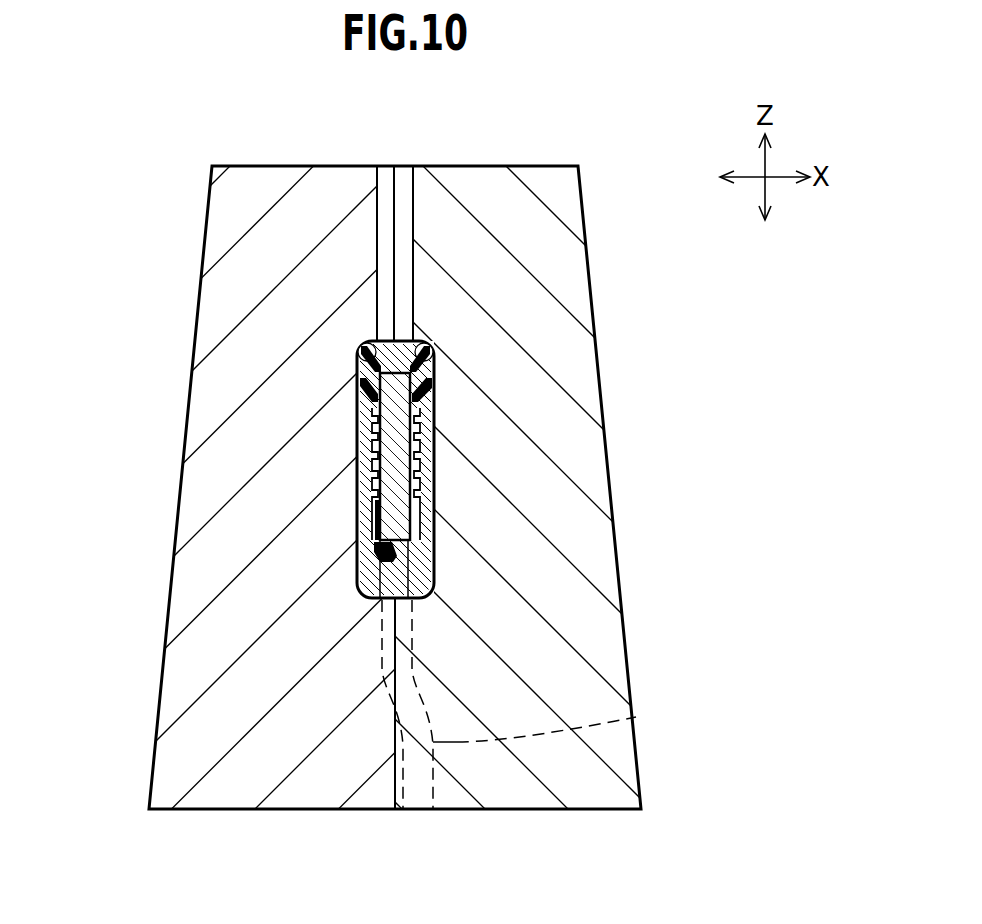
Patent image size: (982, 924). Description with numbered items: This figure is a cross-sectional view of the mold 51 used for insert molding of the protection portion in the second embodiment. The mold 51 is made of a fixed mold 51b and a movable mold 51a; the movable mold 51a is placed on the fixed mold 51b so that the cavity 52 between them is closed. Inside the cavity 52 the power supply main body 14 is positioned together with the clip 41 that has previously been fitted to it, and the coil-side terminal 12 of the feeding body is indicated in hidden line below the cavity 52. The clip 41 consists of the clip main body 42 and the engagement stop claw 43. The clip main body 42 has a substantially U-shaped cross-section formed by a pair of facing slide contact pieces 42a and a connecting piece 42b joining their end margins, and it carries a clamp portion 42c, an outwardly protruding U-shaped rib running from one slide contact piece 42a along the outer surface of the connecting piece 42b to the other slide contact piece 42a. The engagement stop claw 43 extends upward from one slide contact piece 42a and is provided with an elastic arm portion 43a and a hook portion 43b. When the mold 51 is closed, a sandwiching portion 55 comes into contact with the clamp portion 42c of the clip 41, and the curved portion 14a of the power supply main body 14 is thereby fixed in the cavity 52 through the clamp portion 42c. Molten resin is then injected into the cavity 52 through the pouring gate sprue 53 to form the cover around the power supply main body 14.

The coil-side terminal 12 is at (636, 719).
The power supply main body 14 is at (307, 458).
The curved portion 14a is at (390, 497).
The clip 41 is at (386, 330).
The clip main body 42 is at (395, 359).
The slide contact pieces 42a is at (372, 452).
The connecting piece 42b is at (400, 366).
The clamp portion 42c is at (364, 391).
The engagement stop claw 43 is at (398, 596).
The elastic arm portion 43a is at (372, 562).
The hook portion 43b is at (422, 498).
The mold 51 is at (491, 515).
The movable mold 51a is at (523, 790).
The fixed mold 51b is at (237, 783).
The cavity 52 is at (434, 538).
The pouring gate sprue 53 is at (393, 326).
The sandwiching portion 55 is at (368, 346).